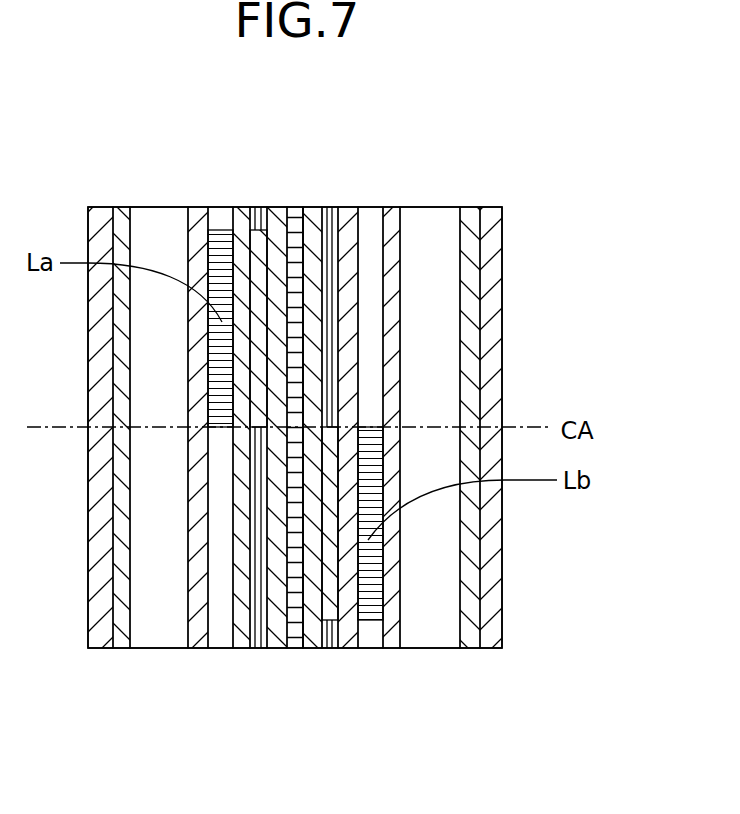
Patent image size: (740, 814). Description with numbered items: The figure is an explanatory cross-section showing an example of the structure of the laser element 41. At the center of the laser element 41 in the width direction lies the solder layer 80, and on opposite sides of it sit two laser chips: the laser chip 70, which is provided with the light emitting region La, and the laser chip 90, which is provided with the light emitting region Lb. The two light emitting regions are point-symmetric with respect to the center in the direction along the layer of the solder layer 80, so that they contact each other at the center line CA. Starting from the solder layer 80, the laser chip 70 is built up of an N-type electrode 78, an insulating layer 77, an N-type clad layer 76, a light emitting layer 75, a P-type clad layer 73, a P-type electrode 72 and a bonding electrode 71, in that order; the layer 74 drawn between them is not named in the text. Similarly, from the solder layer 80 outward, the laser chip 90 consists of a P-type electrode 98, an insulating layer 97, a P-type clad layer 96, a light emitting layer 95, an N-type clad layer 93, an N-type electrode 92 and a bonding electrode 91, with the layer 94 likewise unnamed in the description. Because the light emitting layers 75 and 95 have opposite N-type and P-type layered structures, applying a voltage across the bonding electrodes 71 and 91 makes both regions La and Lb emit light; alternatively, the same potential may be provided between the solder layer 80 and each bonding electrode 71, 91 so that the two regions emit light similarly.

The laser element 41 is at (250, 693).
The laser chip 70 is at (88, 652).
The bonding electrode 71 is at (100, 207).
The P-type electrode 72 is at (120, 207).
The P-type clad layer 73 is at (160, 207).
The fourth layer 74 is at (195, 207).
The light emitting layer 75 is at (220, 207).
The N-type clad layer 76 is at (242, 207).
The insulating layer 77 is at (258, 207).
The N-type electrode 78 is at (275, 207).
The solder layer 80 is at (293, 207).
The laser chip 90 is at (302, 203).
The bonding electrode 91 is at (488, 648).
The N-type electrode 92 is at (467, 648).
The N-type clad layer 93 is at (428, 648).
The support layer 94 is at (390, 648).
The light emitting layer 95 is at (367, 648).
The P-type clad layer 96 is at (345, 648).
The insulating layer 97 is at (327, 648).
The P-type electrode 98 is at (310, 648).